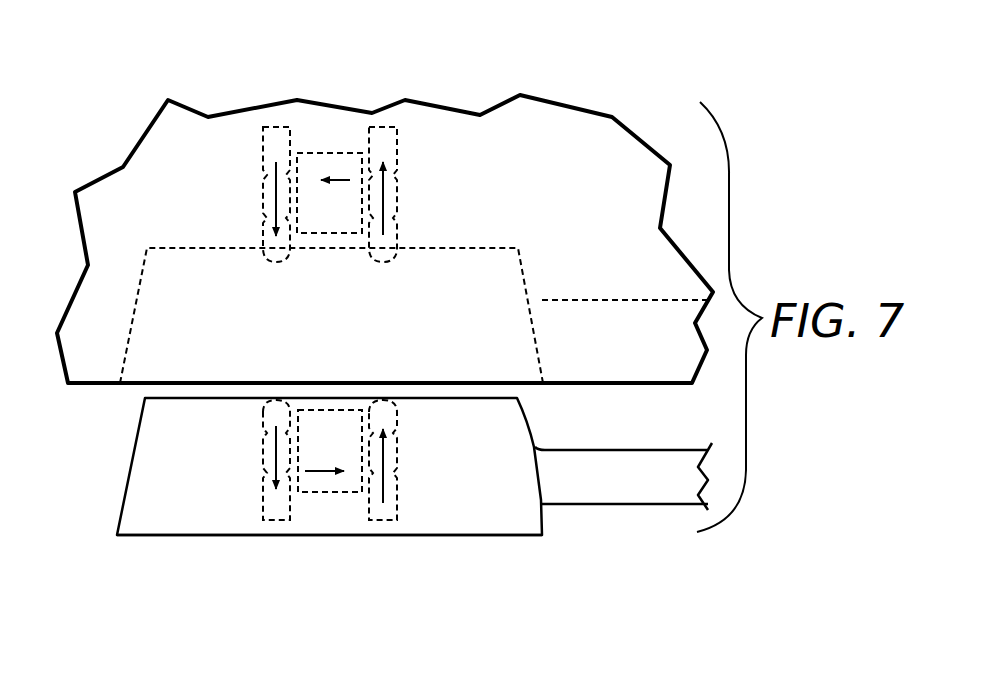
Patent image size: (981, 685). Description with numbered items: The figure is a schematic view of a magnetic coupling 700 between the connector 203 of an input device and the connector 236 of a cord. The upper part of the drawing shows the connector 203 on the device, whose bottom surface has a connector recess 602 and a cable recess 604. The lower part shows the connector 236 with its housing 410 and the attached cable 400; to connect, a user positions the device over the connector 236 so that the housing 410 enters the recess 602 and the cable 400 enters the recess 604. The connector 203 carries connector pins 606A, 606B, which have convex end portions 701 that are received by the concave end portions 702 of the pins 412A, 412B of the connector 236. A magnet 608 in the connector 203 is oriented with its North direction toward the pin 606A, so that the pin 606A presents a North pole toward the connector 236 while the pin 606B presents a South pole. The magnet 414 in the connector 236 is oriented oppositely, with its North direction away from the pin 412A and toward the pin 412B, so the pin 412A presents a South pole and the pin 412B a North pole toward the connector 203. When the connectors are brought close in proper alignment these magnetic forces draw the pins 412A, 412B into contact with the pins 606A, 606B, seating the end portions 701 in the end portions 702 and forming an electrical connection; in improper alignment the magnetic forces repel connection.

The connector 203 is at (217, 205).
The connector 236 is at (439, 549).
The cable 400 is at (617, 507).
The housing 410 is at (130, 450).
The pin 412A is at (270, 520).
The pin 412B is at (388, 520).
The magnet 414 is at (327, 492).
The connector recess 602 is at (445, 247).
The cable recess 604 is at (565, 300).
The connector pin 606A is at (278, 125).
The connector pin 606B is at (385, 125).
The magnet 608 is at (327, 153).
The magnetic coupling 700 is at (588, 409).
The convex end portion 701 is at (282, 263).
The concave end portion 702 is at (278, 405).